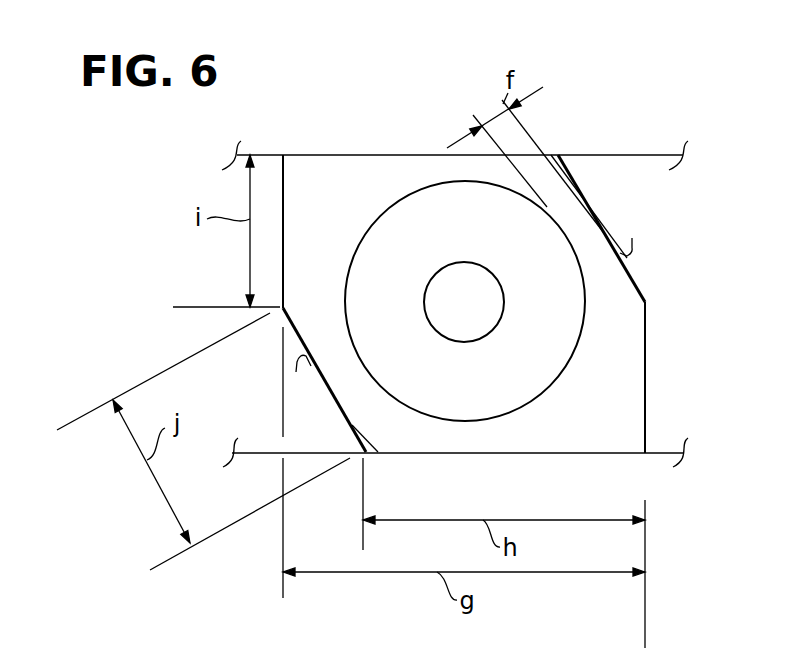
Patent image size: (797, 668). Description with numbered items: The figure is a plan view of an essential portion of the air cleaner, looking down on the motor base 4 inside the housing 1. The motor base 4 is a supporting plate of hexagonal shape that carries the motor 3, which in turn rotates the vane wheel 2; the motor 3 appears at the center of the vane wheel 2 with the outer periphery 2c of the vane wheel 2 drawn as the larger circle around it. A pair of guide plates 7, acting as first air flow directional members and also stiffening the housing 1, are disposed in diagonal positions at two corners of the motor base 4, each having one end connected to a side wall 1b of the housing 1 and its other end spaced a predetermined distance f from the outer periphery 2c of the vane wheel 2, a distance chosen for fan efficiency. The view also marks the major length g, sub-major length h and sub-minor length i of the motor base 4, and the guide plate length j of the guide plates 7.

The housing 1 is at (620, 153).
The side walls 1b is at (658, 155).
The vane wheel 2 is at (523, 253).
The outer periphery of vane wheel 2c is at (585, 287).
The motor 3 is at (455, 342).
The motor base 4 is at (600, 430).
The guide plates 7 is at (588, 163).